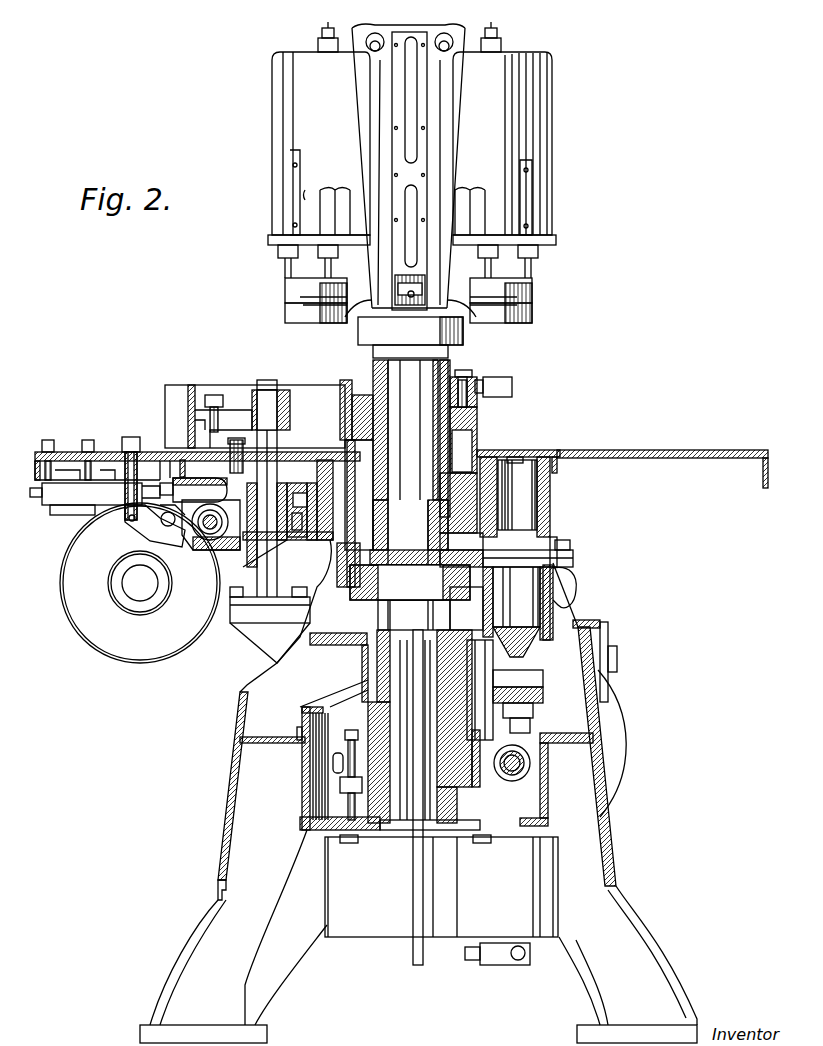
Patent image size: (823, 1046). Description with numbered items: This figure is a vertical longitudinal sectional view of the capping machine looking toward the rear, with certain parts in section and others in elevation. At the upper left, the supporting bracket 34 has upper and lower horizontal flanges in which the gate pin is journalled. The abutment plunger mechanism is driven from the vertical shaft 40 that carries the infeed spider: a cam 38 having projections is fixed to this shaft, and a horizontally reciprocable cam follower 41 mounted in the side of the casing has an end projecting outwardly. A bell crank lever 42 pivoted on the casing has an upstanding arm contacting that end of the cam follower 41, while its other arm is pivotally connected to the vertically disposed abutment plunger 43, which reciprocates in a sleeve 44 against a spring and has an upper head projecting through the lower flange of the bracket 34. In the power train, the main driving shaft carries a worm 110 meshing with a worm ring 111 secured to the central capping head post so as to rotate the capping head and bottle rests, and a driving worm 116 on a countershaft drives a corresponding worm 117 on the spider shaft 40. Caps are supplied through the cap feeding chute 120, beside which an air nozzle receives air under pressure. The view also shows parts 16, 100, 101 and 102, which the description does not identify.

The supporting bracket 34 is at (60, 450).
The sleeve 44 is at (112, 460).
The pin 16 is at (130, 440).
The cam 38 is at (238, 510).
The vertical shaft 40 is at (266, 400).
The abutment plunger 43 is at (122, 500).
The bell crank lever 42 is at (148, 515).
The cam follower 41 is at (198, 526).
The driving worm 116 is at (212, 530).
The worm 117 is at (235, 555).
The cap feeding chute 120 is at (393, 282).
The lug 102 is at (490, 378).
The housing 101 is at (490, 452).
The guard plate 100 is at (552, 455).
The worm 110 is at (525, 752).
The worm ring 111 is at (525, 768).